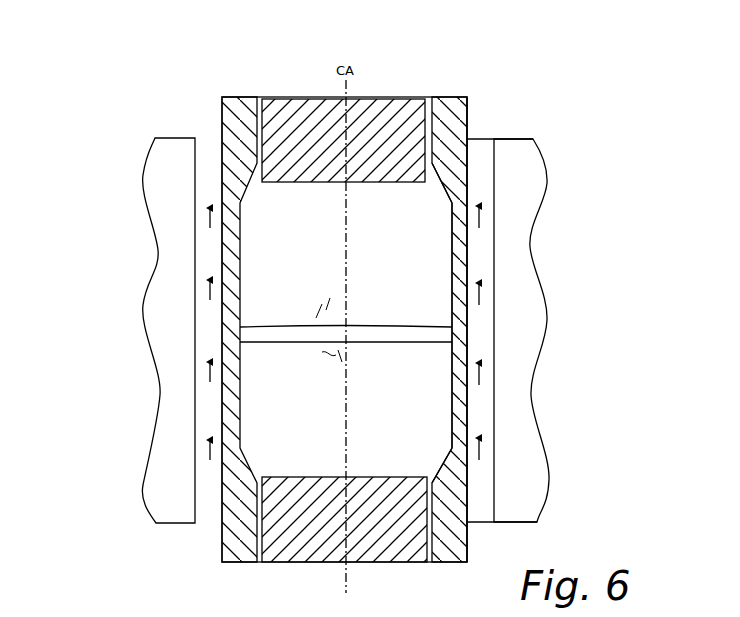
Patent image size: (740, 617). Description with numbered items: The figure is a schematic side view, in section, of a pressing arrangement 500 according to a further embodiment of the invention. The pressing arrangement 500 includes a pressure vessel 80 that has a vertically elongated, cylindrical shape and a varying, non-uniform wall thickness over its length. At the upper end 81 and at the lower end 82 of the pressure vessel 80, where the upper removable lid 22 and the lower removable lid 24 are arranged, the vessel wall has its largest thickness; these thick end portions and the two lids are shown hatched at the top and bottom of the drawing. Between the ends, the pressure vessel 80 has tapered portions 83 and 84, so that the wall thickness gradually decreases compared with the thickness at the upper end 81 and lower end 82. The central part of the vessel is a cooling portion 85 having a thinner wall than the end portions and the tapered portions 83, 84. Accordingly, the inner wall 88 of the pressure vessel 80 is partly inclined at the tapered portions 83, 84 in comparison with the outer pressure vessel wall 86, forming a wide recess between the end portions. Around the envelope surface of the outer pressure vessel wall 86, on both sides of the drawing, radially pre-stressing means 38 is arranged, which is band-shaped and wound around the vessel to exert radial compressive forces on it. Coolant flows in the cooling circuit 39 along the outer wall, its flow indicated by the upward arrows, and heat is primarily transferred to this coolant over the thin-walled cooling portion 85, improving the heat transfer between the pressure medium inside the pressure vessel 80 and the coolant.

The pressing arrangement 500 is at (393, 63).
The upper removable lid 22 is at (323, 97).
The lower removable lid 24 is at (298, 563).
The pressure vessel 80 is at (452, 97).
The upper end 81 is at (470, 107).
The lower end 82 is at (467, 510).
The tapered portion 83 is at (448, 182).
The tapered portion 84 is at (447, 470).
The cooling portion 85 is at (475, 265).
The outer pressure vessel wall 86 is at (465, 186).
The inner wall 88 is at (452, 245).
The radially pre-stressing means 38 is at (160, 402).
The cooling circuit 39 is at (213, 266).